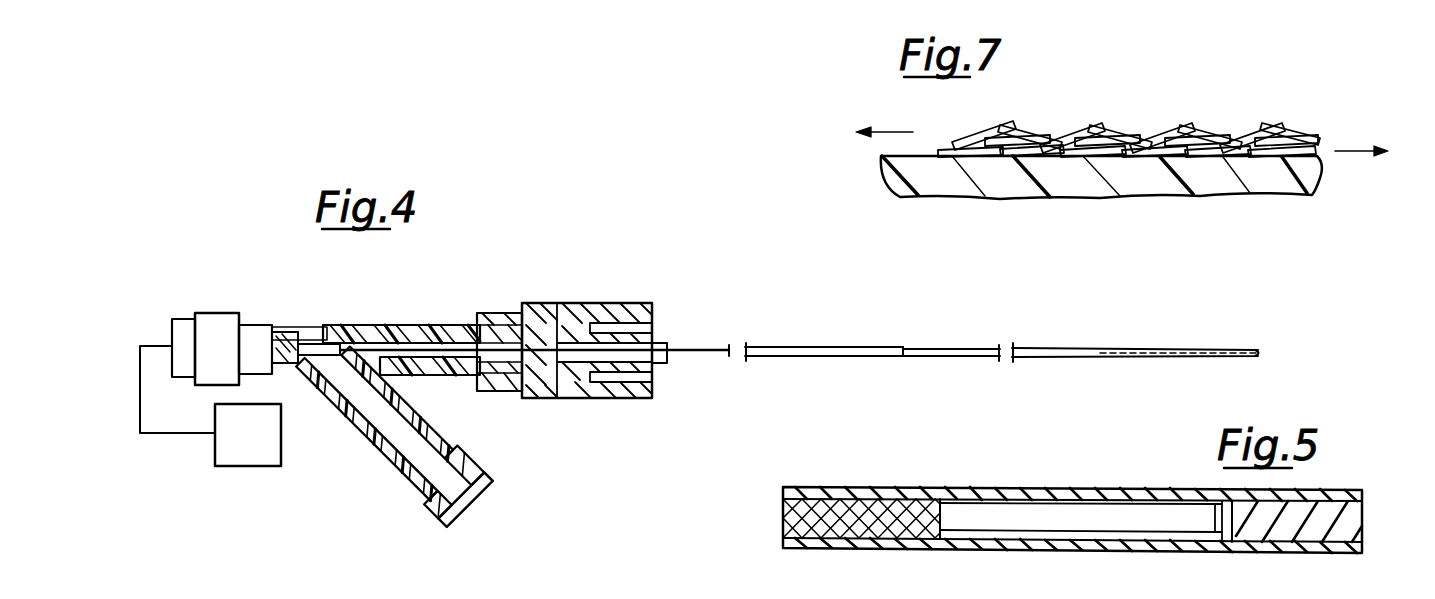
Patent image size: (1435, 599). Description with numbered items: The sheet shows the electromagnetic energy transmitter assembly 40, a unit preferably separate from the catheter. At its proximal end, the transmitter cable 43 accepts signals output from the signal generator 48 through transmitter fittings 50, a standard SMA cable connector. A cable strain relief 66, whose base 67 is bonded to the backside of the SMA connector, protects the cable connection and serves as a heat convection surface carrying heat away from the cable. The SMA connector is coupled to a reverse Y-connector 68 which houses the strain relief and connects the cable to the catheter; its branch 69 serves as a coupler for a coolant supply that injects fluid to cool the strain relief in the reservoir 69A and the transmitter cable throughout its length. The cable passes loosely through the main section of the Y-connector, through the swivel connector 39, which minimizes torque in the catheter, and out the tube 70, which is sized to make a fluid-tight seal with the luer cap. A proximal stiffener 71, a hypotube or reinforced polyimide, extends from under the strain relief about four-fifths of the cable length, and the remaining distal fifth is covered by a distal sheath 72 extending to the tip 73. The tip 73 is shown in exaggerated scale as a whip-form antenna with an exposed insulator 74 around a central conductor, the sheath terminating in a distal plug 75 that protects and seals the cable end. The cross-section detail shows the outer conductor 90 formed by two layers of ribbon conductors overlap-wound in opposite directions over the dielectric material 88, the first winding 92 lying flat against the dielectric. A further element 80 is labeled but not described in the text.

In FIG. 4, the swivel connector 39 is at (557, 303).
In FIG. 4, the transmitter assembly 40 is at (672, 300).
In FIG. 4, the transmitter cable 43 is at (899, 313).
In FIG. 4, the signal generator 48 is at (248, 435).
In FIG. 4, the transmitter fittings 50 is at (214, 313).
In FIG. 4, the cable strain relief 66 is at (328, 344).
In FIG. 4, the base 67 is at (285, 334).
In FIG. 4, the reverse Y-connector 68 is at (389, 325).
In FIG. 4, the branch 69 is at (440, 432).
In FIG. 4, the reservoir 69A is at (331, 366).
In FIG. 4, the tube 70 is at (665, 364).
In FIG. 4, the proximal stiffener 71 is at (719, 357).
In FIG. 4, the distal sheath 72 is at (964, 347).
In FIG. 4, the tip 73 is at (1239, 336).
In FIG. 5, the tip 73 is at (1017, 468).
In FIG. 5, the exposed insulator 74 is at (1053, 518).
In FIG. 5, the distal plug 75 is at (1362, 519).
In FIG. 4, the housing 80 is at (302, 598).
In FIG. 7, the dielectric material 88 is at (1283, 177).
In FIG. 7, the outer conductor 90 is at (1176, 110).
In FIG. 7, the first winding 92 is at (984, 156).